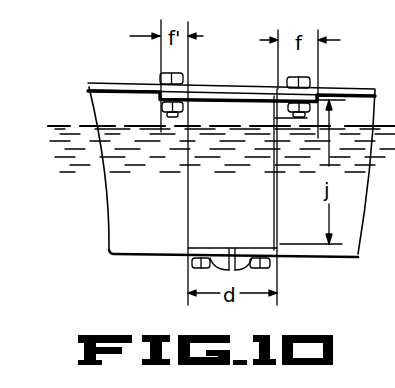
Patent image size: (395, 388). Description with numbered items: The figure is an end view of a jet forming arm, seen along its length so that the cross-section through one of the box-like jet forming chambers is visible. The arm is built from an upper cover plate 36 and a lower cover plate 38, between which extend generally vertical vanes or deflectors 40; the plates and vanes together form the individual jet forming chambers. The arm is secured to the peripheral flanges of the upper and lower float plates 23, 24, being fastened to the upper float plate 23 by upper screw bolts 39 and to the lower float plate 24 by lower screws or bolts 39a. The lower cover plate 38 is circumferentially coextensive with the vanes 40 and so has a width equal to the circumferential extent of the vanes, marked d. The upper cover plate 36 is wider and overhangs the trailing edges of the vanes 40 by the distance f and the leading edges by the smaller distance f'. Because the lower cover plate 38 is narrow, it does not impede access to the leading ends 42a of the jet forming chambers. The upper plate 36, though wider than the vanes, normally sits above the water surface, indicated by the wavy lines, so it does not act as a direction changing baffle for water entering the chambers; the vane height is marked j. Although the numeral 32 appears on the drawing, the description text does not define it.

The upper float plate 23 is at (88, 86).
The lower float plate 24 is at (131, 256).
The tank 32 is at (116, 182).
The upper cover plate 36 is at (228, 97).
The lower cover plate 38 is at (190, 247).
The upper screw bolts 39 is at (272, 113).
The lower screws or bolts 39a is at (235, 248).
The vanes or deflectors 40 is at (243, 206).
The leading ends of the jet forming chambers 42a is at (187, 193).